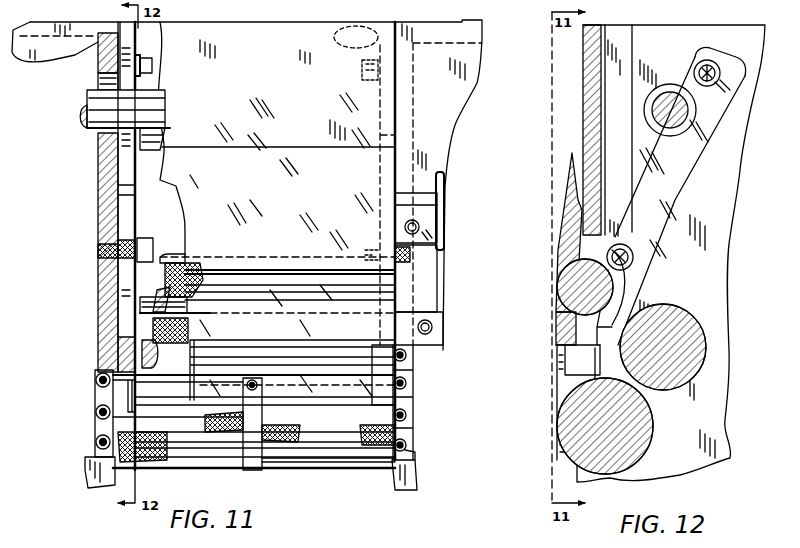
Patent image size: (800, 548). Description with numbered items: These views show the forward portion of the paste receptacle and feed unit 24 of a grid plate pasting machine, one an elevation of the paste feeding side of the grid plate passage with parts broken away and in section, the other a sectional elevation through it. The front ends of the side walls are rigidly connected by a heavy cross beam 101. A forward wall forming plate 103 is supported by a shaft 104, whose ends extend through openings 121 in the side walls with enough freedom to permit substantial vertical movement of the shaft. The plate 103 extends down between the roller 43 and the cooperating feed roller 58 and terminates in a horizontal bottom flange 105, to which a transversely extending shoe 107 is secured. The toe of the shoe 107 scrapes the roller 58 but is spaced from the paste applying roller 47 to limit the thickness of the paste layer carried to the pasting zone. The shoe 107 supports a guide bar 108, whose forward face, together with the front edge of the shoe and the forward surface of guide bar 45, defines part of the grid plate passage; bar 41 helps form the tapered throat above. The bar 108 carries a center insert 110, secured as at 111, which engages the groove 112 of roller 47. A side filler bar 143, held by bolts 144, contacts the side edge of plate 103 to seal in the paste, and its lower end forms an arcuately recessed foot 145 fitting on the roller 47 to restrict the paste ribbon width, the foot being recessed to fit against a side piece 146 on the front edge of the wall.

In FIG. 11, the paste receptacle and feed unit 24 is at (418, 450).
In FIG. 12, the paste receptacle and feed unit 24 is at (735, 460).
In FIG. 11, the bar 41 is at (424, 233).
In FIG. 12, the bar 41 is at (577, 193).
In FIG. 11, the roller 43 is at (396, 283).
In FIG. 12, the roller 43 is at (572, 290).
In FIG. 11, the guide bar 45 is at (440, 327).
In FIG. 12, the guide bar 45 is at (558, 335).
In FIG. 11, the paste applying roller 47 is at (338, 458).
In FIG. 12, the paste applying roller 47 is at (578, 427).
In FIG. 11, the cooperating feed roller 58 is at (140, 316).
In FIG. 12, the cooperating feed roller 58 is at (692, 347).
In FIG. 11, the cross beam 101 is at (168, 155).
In FIG. 12, the cross beam 101 is at (592, 98).
In FIG. 11, the forward wall forming plate 103 is at (131, 133).
In FIG. 11, the shaft 104 is at (97, 108).
In FIG. 12, the shaft 104 is at (675, 124).
In FIG. 11, the horizontal bottom flange 105 is at (263, 348).
In FIG. 11, the shoe 107 is at (368, 359).
In FIG. 11, the guide bar 108 is at (365, 398).
In FIG. 11, the center insert 110 is at (243, 430).
In FIG. 11, the securing means 111 is at (258, 385).
In FIG. 11, the groove 112 is at (250, 452).
In FIG. 11, the opening 121 is at (112, 80).
In FIG. 12, the opening 121 is at (696, 110).
In FIG. 11, the side filler bar 143 is at (129, 192).
In FIG. 12, the side filler bar 143 is at (668, 195).
In FIG. 11, the bolt 144 is at (152, 67).
In FIG. 12, the bolt 144 is at (720, 75).
In FIG. 11, the arcuately recessed foot 145 is at (110, 362).
In FIG. 12, the arcuately recessed foot 145 is at (577, 358).
In FIG. 11, the side piece 146 is at (130, 392).